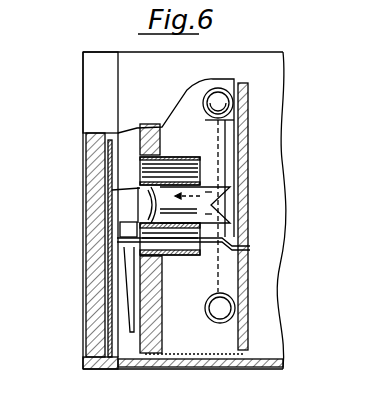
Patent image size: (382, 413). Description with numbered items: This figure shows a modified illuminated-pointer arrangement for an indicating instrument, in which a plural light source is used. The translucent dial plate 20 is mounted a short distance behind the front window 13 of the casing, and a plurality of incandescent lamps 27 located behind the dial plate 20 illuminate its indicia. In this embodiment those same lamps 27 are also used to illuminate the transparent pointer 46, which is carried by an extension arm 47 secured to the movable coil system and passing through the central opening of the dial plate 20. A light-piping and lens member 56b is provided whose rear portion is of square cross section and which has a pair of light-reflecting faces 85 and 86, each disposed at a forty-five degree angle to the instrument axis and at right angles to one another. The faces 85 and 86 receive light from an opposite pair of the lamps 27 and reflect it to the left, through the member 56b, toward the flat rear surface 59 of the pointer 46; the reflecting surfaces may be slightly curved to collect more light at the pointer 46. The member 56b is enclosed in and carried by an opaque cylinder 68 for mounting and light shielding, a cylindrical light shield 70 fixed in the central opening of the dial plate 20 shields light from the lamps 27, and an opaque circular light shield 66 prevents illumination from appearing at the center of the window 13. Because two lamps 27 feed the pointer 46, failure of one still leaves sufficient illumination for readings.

The front window 13 is at (90, 312).
The dial plate 20 is at (141, 342).
The incandescent lamps 27 is at (212, 100).
The pointer 46 is at (130, 275).
The extension arm 47 is at (209, 246).
The light-piping and lens member 56b is at (140, 190).
The flat rear surface of the pointer 59 is at (140, 190).
The opaque circular light shield 66 is at (112, 230).
The opaque cylinder 68 is at (182, 183).
The cylindrical light shield 70 is at (169, 157).
The light-reflecting face 85 is at (228, 191).
The light-reflecting face 86 is at (228, 220).